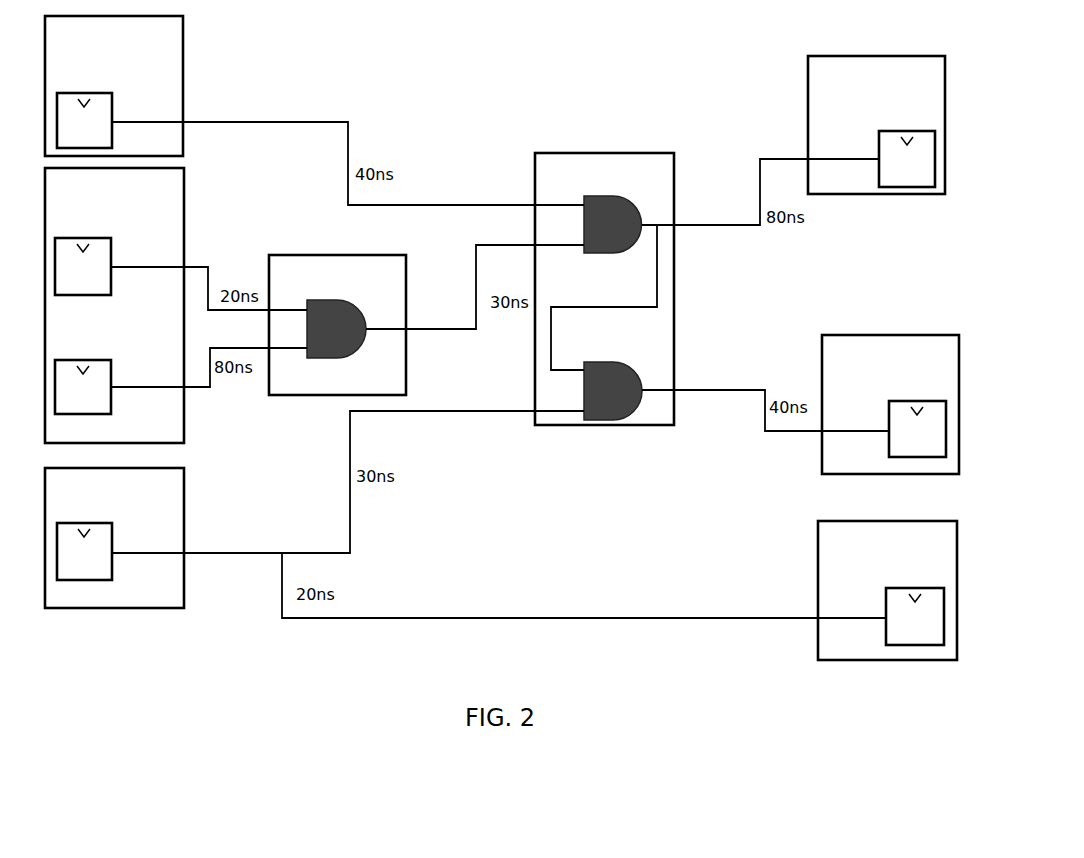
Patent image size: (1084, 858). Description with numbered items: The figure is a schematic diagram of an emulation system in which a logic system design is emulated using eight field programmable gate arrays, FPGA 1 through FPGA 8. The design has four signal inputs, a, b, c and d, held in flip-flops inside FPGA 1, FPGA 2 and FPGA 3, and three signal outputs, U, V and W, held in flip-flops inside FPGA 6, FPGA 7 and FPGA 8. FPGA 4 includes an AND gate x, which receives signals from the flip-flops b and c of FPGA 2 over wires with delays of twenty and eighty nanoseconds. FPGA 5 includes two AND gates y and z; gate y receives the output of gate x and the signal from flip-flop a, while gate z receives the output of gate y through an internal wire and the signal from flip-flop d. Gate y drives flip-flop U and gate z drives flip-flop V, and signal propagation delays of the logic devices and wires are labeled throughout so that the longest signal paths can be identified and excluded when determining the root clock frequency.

The FPGA 1 is at (114, 86).
The FPGA 2 is at (114, 305).
The FPGA 3 is at (114, 538).
The FPGA 4 is at (337, 325).
The FPGA 5 is at (604, 289).
The FPGA 6 is at (876, 125).
The FPGA 7 is at (890, 404).
The FPGA 8 is at (887, 590).